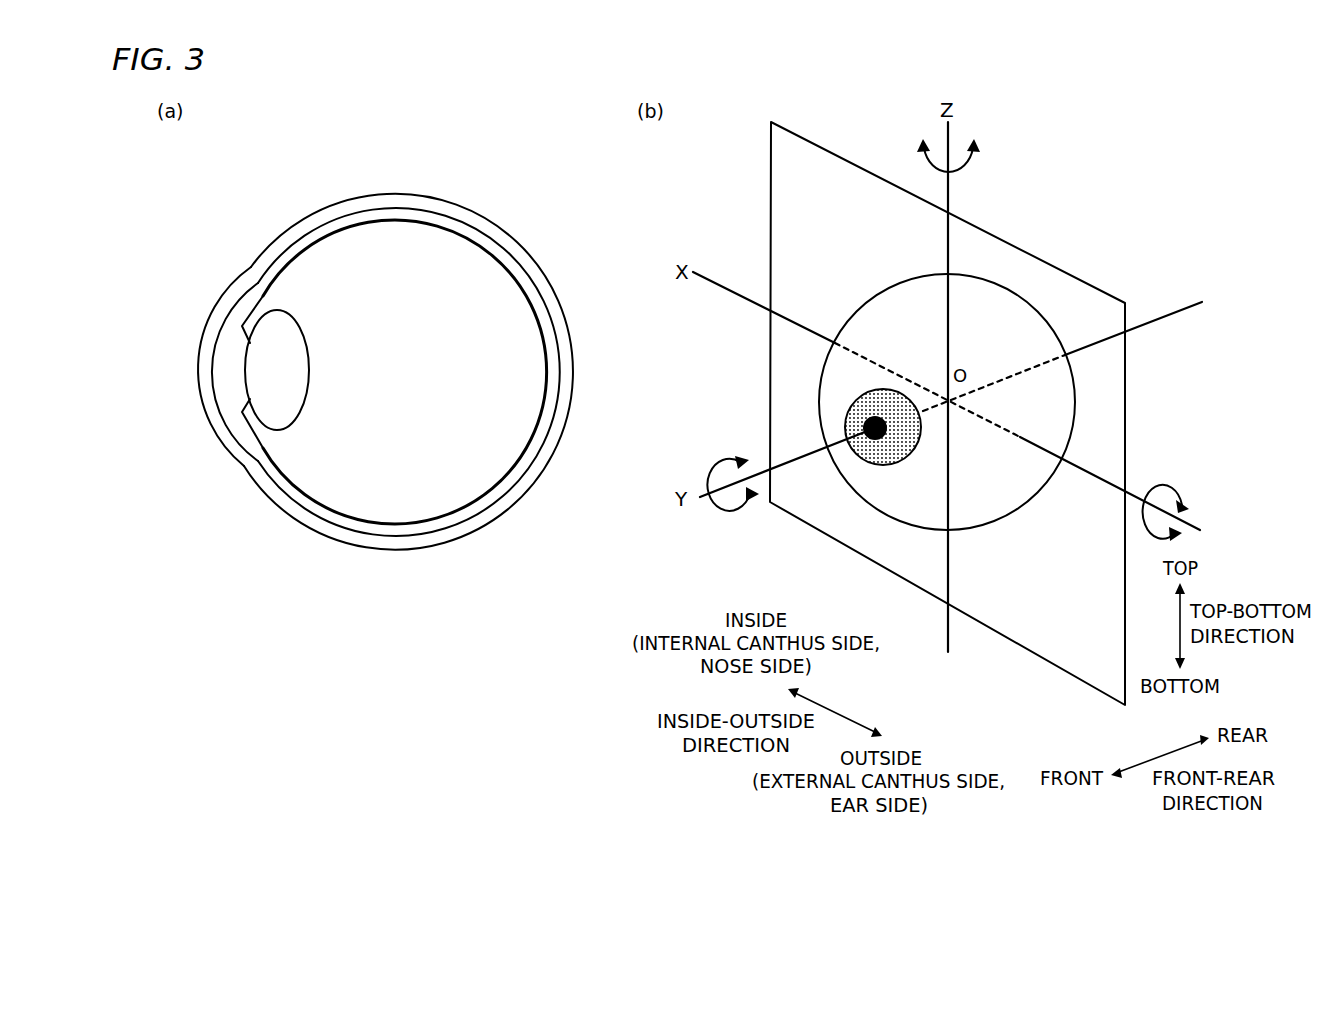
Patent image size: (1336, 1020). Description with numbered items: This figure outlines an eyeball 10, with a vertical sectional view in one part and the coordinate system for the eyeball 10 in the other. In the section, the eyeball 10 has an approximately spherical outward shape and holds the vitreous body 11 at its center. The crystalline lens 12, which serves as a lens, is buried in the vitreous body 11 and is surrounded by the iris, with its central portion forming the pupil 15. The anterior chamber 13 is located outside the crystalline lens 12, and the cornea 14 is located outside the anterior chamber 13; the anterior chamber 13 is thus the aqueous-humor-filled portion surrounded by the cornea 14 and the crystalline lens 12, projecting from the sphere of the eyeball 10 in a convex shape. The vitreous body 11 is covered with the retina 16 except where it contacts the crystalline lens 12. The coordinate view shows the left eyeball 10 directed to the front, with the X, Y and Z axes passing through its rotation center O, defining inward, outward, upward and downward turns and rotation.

The eyeball 10 is at (399, 179).
The vitreous body 11 is at (320, 268).
The crystalline lens 12 is at (283, 333).
The anterior chamber 13 is at (233, 347).
The cornea 14 is at (207, 372).
The pupil 15 is at (243, 370).
The retina 16 is at (367, 523).